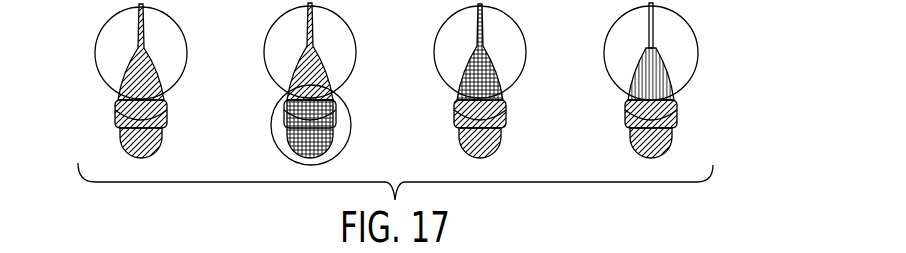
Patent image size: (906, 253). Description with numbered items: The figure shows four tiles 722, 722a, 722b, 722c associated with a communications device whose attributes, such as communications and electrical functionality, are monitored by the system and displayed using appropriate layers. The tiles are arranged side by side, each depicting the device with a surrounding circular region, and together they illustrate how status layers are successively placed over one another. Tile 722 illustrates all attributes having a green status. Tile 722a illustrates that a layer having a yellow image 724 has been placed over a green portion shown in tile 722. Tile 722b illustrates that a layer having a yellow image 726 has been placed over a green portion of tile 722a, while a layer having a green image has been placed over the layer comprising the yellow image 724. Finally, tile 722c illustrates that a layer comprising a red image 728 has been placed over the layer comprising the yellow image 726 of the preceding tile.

The tile 722 is at (118, 134).
The tile 722a is at (297, 77).
The tile 722b is at (500, 133).
The tile 722c is at (672, 133).
The yellow image 724 is at (350, 137).
The yellow image 726 is at (513, 23).
The red image 728 is at (683, 22).